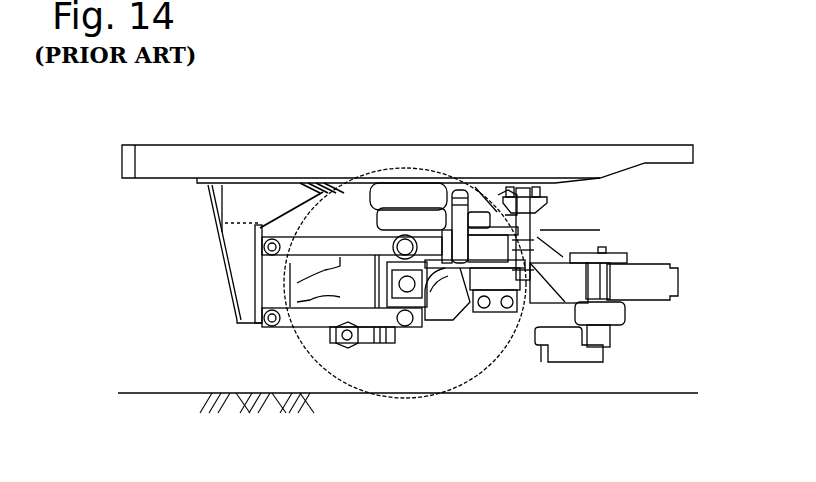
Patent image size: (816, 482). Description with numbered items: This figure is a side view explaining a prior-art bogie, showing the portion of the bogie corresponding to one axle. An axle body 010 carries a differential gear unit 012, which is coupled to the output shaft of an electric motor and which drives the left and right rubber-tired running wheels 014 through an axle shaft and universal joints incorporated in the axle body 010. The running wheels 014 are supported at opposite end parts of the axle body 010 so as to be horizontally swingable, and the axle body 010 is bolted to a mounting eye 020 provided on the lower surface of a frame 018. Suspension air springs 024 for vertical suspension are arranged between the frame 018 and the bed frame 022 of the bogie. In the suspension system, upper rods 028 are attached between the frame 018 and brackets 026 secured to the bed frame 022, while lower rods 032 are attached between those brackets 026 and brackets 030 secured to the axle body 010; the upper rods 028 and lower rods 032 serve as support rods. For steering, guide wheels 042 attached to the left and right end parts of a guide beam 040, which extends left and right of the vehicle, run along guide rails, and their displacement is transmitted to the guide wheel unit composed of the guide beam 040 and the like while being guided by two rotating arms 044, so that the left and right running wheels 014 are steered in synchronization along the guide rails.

The axle body 010 is at (517, 323).
The differential gear unit 012 is at (318, 310).
The running wheels 014 is at (346, 394).
The frame 018 is at (560, 208).
The mounting eye 020 is at (388, 245).
The bed frame 022 is at (268, 158).
The suspension air springs 024 is at (395, 186).
The brackets 026 is at (208, 210).
The upper rods 028 is at (343, 235).
The brackets 030 is at (433, 320).
The lower rods 032 is at (330, 327).
The guide beam 040 is at (620, 322).
The guide wheels 042 is at (540, 352).
The rotating arms 044 is at (560, 250).